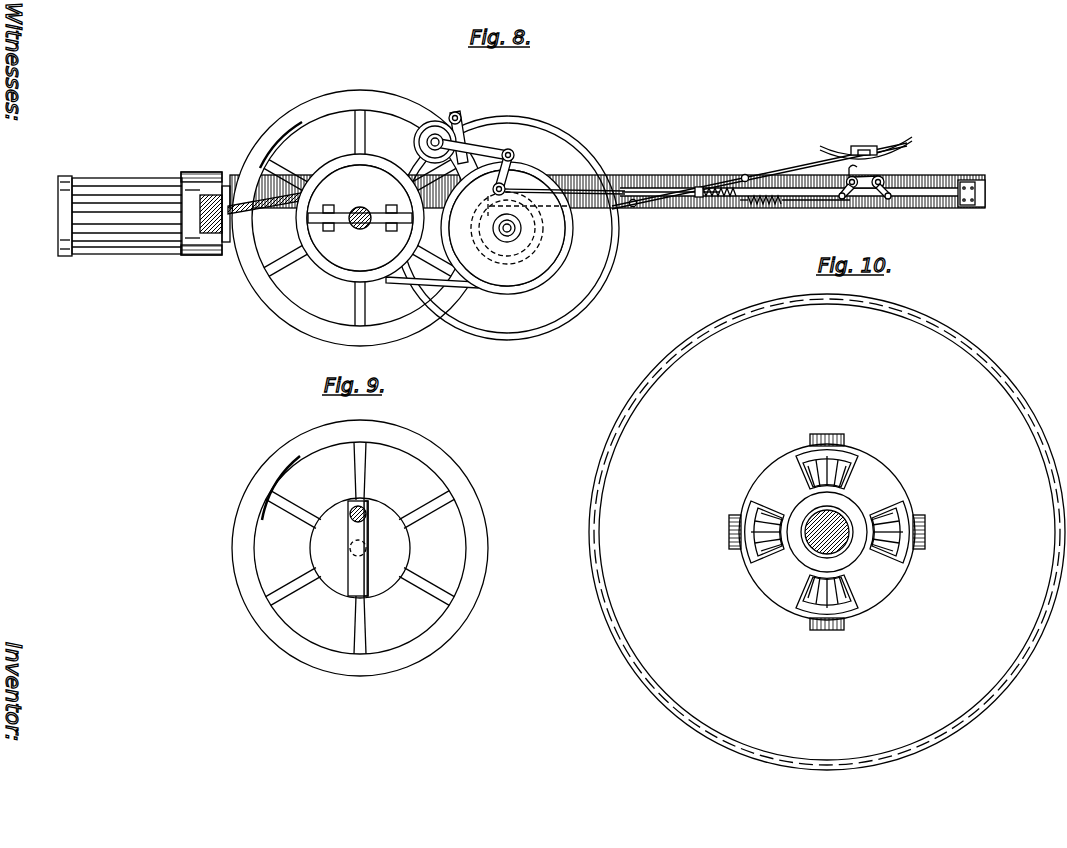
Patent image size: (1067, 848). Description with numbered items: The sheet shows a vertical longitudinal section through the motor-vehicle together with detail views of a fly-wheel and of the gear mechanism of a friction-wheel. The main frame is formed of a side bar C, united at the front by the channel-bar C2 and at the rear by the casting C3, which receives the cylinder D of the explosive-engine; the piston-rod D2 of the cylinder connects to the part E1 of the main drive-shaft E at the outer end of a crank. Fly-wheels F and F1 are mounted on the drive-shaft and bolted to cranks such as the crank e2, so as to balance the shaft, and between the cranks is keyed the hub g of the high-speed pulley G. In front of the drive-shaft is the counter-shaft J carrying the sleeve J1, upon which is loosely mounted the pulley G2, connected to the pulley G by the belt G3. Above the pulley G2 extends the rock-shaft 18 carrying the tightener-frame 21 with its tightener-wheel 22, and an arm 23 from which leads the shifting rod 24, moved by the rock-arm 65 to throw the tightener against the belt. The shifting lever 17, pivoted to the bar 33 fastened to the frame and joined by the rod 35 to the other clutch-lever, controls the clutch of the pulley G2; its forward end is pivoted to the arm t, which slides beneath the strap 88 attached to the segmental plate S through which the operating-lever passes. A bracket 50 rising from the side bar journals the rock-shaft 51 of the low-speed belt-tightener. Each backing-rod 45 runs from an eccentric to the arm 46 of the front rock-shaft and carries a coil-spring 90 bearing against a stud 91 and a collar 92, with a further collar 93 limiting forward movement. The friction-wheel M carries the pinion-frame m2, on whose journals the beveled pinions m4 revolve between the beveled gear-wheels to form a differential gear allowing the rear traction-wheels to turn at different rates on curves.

In FIG. 8, the cylinder D is at (120, 216).
In FIG. 8, the casting C3 is at (210, 170).
In FIG. 8, the piston-rod D2 is at (264, 200).
In FIG. 8, the side bar C is at (928, 180).
In FIG. 8, the channel-bar C2 is at (986, 191).
In FIG. 8, the fly-wheel F1 is at (412, 330).
In FIG. 8, the high-speed pulley G is at (360, 218).
In FIG. 8, the main drive-shaft E is at (369, 210).
In FIG. 8, the hub g is at (372, 226).
In FIG. 8, the belt G3 is at (415, 285).
In FIG. 8, the pulley G2 is at (570, 240).
In FIG. 8, the counter-shaft J is at (515, 236).
In FIG. 10, the counter-shaft J is at (845, 548).
In FIG. 8, the sleeve J1 is at (507, 242).
In FIG. 8, the tightener-wheel 22 is at (437, 121).
In FIG. 8, the rock-shaft 51 is at (459, 113).
In FIG. 8, the bracket 50 is at (463, 125).
In FIG. 8, the tightener-frame 21 is at (480, 150).
In FIG. 8, the rock-shaft 18 is at (510, 149).
In FIG. 8, the arm 23 is at (506, 185).
In FIG. 8, the shifting rod 24 is at (598, 190).
In FIG. 8, the bar 33 is at (636, 200).
In FIG. 8, the backing-rod 45 is at (688, 205).
In FIG. 8, the shifting lever 17 is at (760, 176).
In FIG. 8, the rod 35 is at (746, 174).
In FIG. 8, the collar 93 is at (706, 200).
In FIG. 8, the stud 91 is at (730, 200).
In FIG. 8, the coil-spring 90 is at (766, 206).
In FIG. 8, the collar 92 is at (800, 203).
In FIG. 8, the arm 46 is at (883, 178).
In FIG. 8, the rock-arm 65 is at (858, 200).
In FIG. 8, the segmental plate S is at (868, 139).
In FIG. 8, the arm t is at (861, 146).
In FIG. 8, the strap 88 is at (871, 146).
In FIG. 9, the fly-wheel F is at (412, 440).
In FIG. 9, the shaft part E1 is at (368, 508).
In FIG. 9, the crank e2 is at (356, 559).
In FIG. 10, the friction-wheel M is at (827, 532).
In FIG. 10, the pinion-frame m2 is at (878, 476).
In FIG. 10, the beveled pinion m4 is at (902, 510).